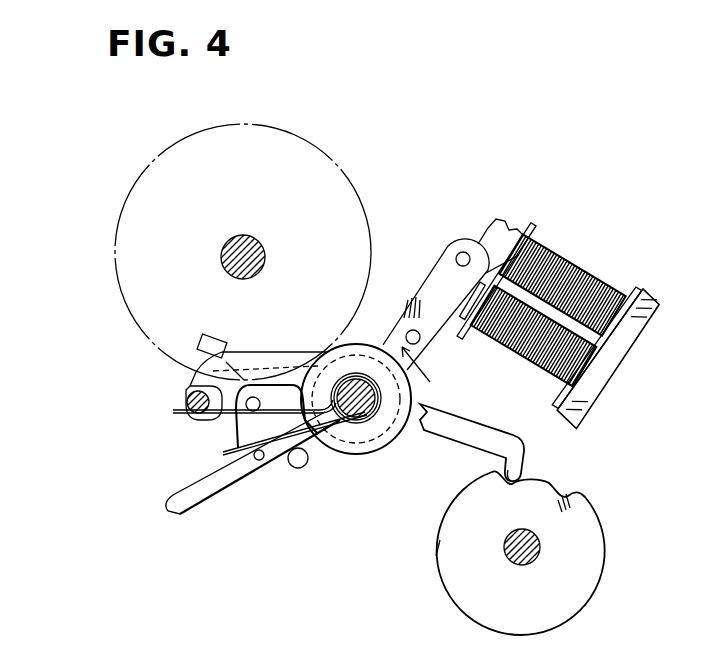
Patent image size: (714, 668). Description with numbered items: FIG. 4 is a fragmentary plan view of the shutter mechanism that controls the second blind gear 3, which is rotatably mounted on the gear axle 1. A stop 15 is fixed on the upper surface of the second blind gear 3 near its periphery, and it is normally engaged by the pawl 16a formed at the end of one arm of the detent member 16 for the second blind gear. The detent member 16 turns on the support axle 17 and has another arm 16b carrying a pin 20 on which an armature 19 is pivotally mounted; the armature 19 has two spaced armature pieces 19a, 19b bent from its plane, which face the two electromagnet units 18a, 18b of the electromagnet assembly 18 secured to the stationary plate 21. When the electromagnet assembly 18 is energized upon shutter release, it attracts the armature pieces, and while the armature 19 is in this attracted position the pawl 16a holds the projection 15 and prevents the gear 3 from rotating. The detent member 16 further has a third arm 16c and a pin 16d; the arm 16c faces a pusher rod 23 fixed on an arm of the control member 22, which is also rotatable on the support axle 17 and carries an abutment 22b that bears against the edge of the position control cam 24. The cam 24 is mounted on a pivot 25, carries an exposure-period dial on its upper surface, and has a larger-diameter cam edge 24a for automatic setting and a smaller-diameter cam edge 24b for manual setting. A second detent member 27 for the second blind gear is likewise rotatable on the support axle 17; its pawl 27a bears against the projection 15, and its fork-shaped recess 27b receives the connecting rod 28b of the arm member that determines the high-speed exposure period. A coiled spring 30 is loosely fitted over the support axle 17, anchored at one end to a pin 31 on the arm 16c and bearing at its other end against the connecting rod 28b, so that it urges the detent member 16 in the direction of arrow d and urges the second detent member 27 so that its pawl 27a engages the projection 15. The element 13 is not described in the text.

The gear axle 1 is at (230, 238).
The second blind gear 3 is at (114, 263).
The stopper 13 is at (411, 300).
The stop 15 is at (213, 338).
The detent member 16 is at (366, 455).
The pawl 16a is at (198, 352).
The arm 16b is at (438, 285).
The third arm 16c is at (185, 512).
The pin 16d is at (287, 368).
The support axle 17 is at (372, 408).
The electromagnet assembly 18 is at (552, 319).
The electromagnet unit 18a is at (534, 336).
The electromagnet unit 18b is at (562, 284).
The armature 19 is at (497, 218).
The armature piece 19a is at (473, 300).
The armature piece 19b is at (496, 280).
The pin 20 is at (462, 253).
The stationary plate 21 is at (605, 356).
The control member 22 is at (456, 420).
The abutment 22b is at (522, 460).
The pusher rod 23 is at (298, 468).
The position control cam 24 is at (445, 565).
The cam edge 24a is at (430, 550).
The cam edge 24b is at (577, 495).
The pivot 25 is at (540, 550).
The second detent member 27 is at (344, 452).
The pawl 27a is at (226, 366).
The fork-shaped recess 27b is at (200, 420).
The connecting rod 28b is at (190, 398).
The coiled spring 30 is at (411, 331).
The pin 31 is at (223, 455).
The arrow d is at (423, 374).